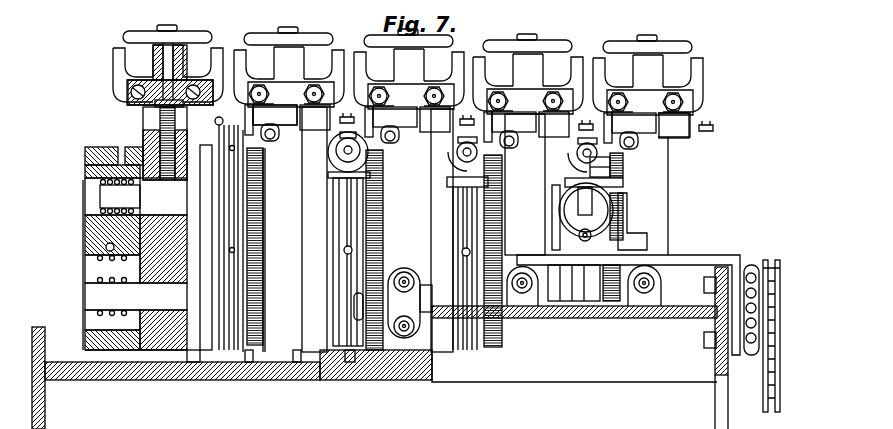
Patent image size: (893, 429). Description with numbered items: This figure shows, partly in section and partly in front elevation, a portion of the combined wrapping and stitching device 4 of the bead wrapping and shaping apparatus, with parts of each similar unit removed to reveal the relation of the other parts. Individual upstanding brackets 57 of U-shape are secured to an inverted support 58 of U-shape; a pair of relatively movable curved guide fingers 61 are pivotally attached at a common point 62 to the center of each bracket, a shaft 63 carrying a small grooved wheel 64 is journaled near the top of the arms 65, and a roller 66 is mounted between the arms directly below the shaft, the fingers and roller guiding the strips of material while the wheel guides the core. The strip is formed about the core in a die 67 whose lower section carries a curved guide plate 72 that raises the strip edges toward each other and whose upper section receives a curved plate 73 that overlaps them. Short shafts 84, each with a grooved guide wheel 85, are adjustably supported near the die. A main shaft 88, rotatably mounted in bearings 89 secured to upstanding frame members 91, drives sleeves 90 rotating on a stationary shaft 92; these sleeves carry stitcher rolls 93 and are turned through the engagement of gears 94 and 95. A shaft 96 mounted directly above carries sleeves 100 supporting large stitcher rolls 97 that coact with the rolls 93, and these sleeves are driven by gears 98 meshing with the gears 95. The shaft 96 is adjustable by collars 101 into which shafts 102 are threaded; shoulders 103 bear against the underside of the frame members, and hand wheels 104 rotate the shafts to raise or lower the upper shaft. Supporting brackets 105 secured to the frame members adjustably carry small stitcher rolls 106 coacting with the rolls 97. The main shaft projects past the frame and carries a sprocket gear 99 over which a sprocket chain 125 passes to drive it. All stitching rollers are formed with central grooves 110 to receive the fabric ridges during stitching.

The combined wrapping and stitching device 4 is at (380, 348).
The upstanding bracket 57 is at (640, 246).
The inverted support 58 is at (705, 258).
The curved guide finger 61 is at (612, 215).
The common point 62 is at (560, 233).
The shaft 63 is at (616, 185).
The grooved wheel 64 is at (615, 195).
The arm 65 is at (545, 196).
The roller 66 is at (552, 212).
The die 67 is at (358, 152).
The curved guide plate 72 is at (336, 180).
The curved plate 73 is at (340, 146).
The short shaft 84 is at (605, 170).
The grooved guide wheel 85 is at (575, 179).
The shaft 88 is at (457, 303).
The bearing 89 is at (522, 300).
The sleeve 90 is at (92, 275).
The frame member 91 is at (152, 125).
The stationary shaft 92 is at (172, 307).
The stitcher roll 93 is at (92, 250).
The gear 94 is at (360, 340).
The gear 95 is at (263, 297).
The shaft 96 is at (86, 190).
The stitcher roll 97 is at (104, 147).
The gear 98 is at (378, 197).
The sprocket gear 99 is at (781, 285).
The sleeve 100 is at (93, 172).
The collar 101 is at (177, 147).
The shaft 102 is at (173, 78).
The shoulder 103 is at (155, 109).
The hand wheel 104 is at (185, 37).
The supporting bracket 105 is at (297, 90).
The small stitcher roll 106 is at (227, 113).
The central groove 110 is at (229, 150).
The sprocket chain 125 is at (781, 352).